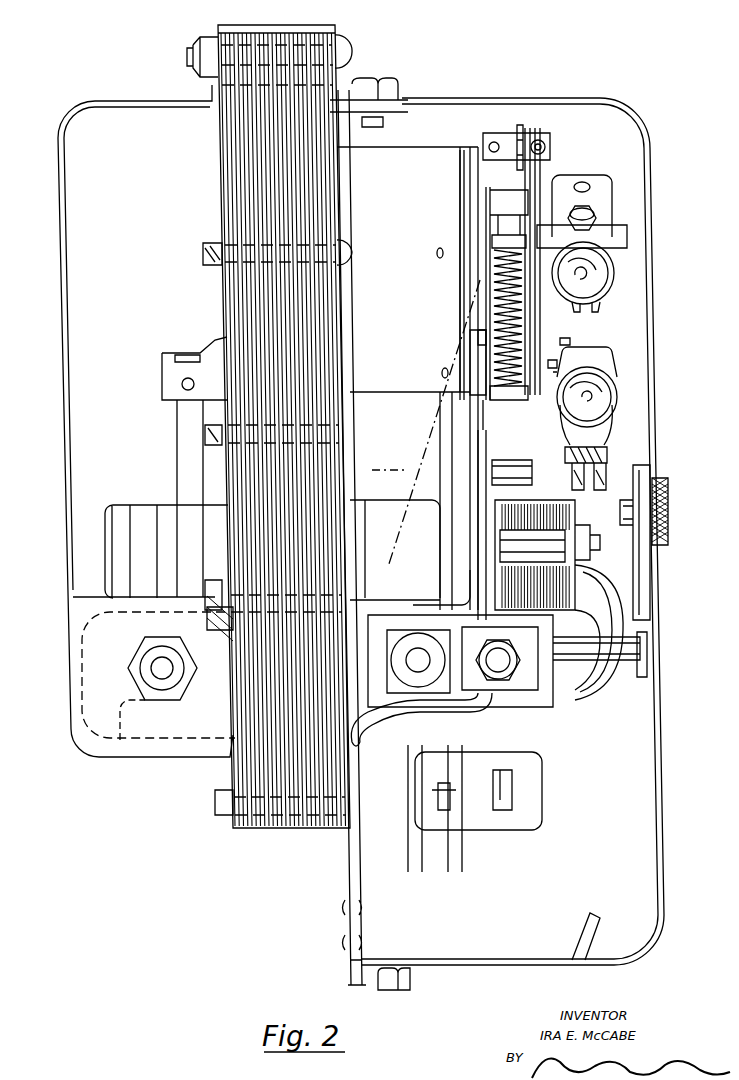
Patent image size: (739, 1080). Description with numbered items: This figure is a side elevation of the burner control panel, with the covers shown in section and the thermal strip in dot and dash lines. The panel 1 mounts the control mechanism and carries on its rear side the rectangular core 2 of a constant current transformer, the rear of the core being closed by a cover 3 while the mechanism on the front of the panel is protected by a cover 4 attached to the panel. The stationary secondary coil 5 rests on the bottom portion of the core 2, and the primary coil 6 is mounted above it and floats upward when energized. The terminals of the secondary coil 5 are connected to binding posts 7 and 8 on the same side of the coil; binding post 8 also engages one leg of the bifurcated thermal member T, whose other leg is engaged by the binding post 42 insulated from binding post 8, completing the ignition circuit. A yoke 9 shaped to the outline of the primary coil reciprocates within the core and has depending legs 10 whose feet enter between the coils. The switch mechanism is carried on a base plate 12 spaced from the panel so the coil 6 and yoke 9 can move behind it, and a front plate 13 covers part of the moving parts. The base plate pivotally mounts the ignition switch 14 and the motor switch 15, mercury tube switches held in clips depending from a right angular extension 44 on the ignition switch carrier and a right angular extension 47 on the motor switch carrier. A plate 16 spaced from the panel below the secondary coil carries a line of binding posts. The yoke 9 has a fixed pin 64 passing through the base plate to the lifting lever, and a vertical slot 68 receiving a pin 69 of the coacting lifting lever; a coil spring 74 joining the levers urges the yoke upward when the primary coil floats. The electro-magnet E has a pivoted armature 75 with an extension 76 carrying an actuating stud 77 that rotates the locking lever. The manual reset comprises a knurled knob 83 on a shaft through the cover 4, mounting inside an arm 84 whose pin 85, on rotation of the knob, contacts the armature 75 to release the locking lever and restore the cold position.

The panel 1 is at (353, 860).
The rectangular core 2 is at (277, 817).
The cover 3 is at (65, 475).
The cover 4 is at (663, 680).
The secondary coil 5 is at (88, 630).
The primary coil 6 is at (130, 548).
The binding post 7 is at (140, 673).
The binding post 8 is at (510, 673).
The yoke 9 is at (343, 275).
The depending legs 10 is at (192, 440).
The base plate 12 is at (465, 155).
The front plate 13 is at (537, 180).
The ignition switch 14 is at (587, 433).
The motor switch 15 is at (603, 267).
The plate 16 is at (460, 850).
The binding post 42 is at (412, 677).
The right angular extension 44 is at (617, 375).
The right angular extension 47 is at (620, 222).
The fixed pin 64 is at (463, 183).
The vertical slot 68 is at (467, 355).
The pin 69 is at (467, 408).
The coil spring 74 is at (530, 323).
The pivoted armature 75 is at (570, 710).
The extension 76 is at (563, 490).
The actuating stud 77 is at (527, 472).
The knurled knob 83 is at (667, 477).
The arm 84 is at (647, 578).
The pin 85 is at (630, 670).
The electro-magnet E is at (597, 693).
The bifurcated thermal member T is at (382, 471).